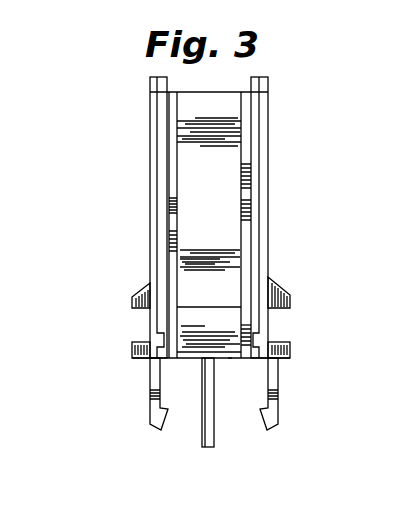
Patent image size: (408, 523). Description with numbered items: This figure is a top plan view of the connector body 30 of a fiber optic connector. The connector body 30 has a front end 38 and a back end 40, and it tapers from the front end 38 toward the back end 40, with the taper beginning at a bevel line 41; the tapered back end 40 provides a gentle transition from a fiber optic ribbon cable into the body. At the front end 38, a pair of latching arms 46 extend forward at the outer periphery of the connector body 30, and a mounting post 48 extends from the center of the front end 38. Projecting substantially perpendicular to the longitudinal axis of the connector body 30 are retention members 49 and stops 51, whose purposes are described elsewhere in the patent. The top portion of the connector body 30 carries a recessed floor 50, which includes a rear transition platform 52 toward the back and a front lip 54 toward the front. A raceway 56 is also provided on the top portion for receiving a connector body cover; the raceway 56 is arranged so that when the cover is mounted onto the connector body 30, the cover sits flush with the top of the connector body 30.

The connector body 30 is at (122, 192).
The front end 38 is at (187, 386).
The back end 40 is at (144, 87).
The bevel line 41 is at (243, 311).
The latching arms 46 is at (152, 378).
The mounting post 48 is at (221, 430).
The retention members 49 is at (134, 346).
The recessed floor 50 is at (208, 226).
The stops 51 is at (134, 303).
The rear transition platform 52 is at (222, 108).
The front lip 54 is at (230, 360).
The raceway 56 is at (176, 162).